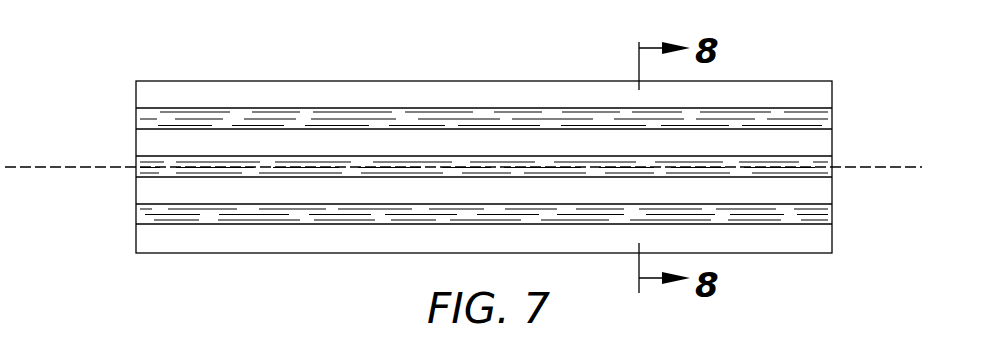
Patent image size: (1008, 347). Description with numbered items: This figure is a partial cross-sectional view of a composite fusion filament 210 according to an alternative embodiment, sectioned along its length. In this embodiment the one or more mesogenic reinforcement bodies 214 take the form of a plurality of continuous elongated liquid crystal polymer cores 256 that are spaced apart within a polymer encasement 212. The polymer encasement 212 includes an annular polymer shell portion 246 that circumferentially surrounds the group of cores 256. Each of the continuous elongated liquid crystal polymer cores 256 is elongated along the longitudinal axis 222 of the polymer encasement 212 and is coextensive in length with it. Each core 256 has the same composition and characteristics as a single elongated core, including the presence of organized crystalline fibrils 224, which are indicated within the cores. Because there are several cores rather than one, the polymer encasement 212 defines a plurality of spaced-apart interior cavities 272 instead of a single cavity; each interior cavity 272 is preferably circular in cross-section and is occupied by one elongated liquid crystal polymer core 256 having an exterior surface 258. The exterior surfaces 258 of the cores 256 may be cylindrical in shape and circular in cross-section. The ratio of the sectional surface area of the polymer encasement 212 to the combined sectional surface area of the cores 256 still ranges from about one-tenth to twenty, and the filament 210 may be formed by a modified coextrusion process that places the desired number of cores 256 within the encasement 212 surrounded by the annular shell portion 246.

The composite fusion filament 210 is at (78, 79).
The polymer encasement 212 is at (198, 80).
The mesogenic reinforcement bodies 214 is at (132, 219).
The longitudinal axis 222 is at (887, 166).
The organized crystalline fibrils 224 is at (369, 125).
The annular polymer shell portion 246 is at (341, 92).
The continuous elongated liquid crystal polymer cores 256 is at (255, 113).
The exterior surface 258 is at (562, 103).
The interior cavities 272 is at (483, 112).